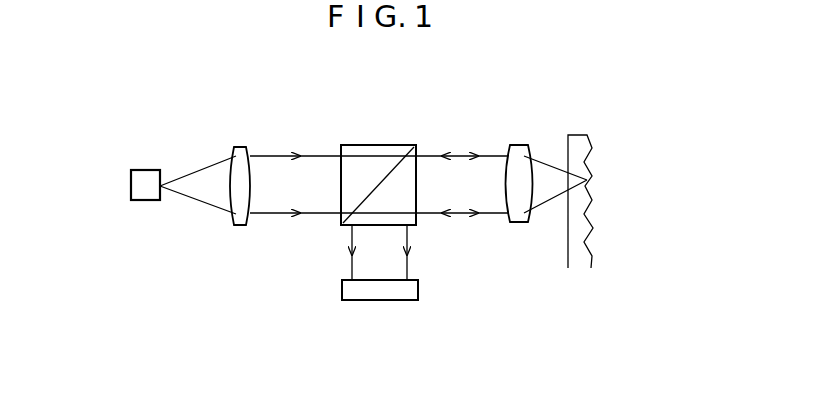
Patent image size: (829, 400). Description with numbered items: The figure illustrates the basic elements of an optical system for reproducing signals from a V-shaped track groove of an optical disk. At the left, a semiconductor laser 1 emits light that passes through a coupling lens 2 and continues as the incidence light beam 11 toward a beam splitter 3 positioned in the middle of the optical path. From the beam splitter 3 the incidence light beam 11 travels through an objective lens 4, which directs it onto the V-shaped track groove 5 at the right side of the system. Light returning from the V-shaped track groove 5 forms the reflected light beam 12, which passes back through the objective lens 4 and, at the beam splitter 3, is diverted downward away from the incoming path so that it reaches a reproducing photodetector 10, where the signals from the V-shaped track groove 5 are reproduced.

The semiconductor laser 1 is at (149, 178).
The coupling lens 2 is at (243, 148).
The beam splitter 3 is at (394, 145).
The objective lens 4 is at (520, 145).
The V-shaped track groove 5 is at (578, 140).
The reproducing photodetector 10 is at (418, 290).
The incidence light beam 11 is at (310, 155).
The reflected light beam 12 is at (409, 255).